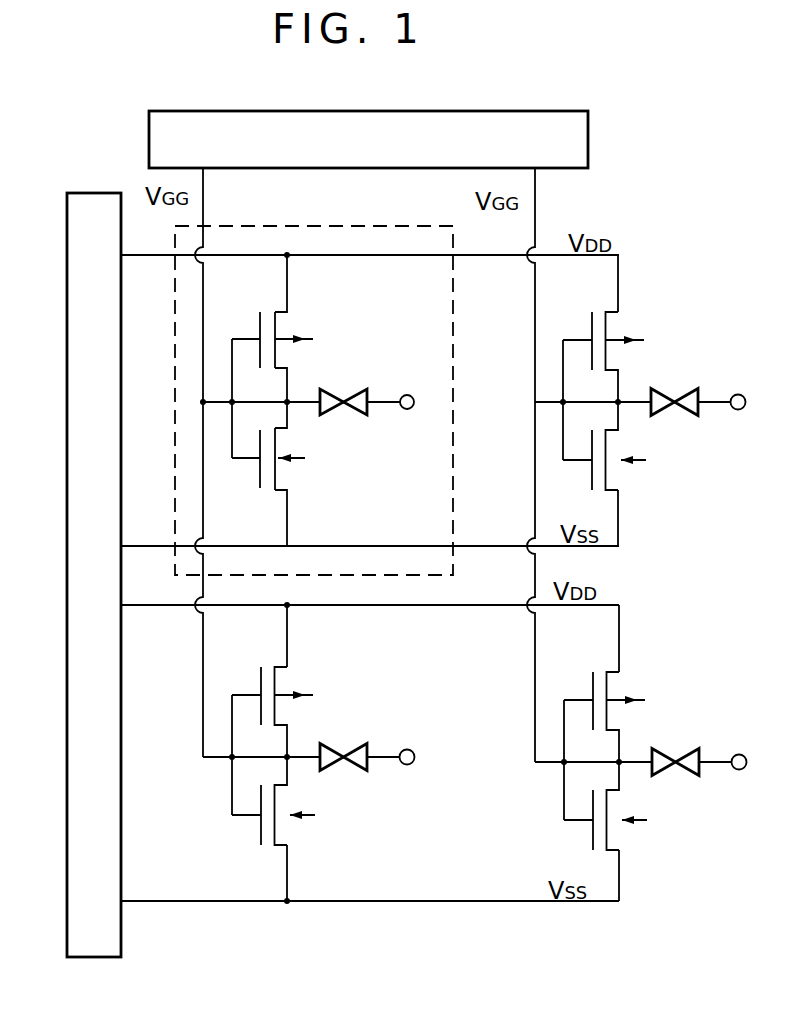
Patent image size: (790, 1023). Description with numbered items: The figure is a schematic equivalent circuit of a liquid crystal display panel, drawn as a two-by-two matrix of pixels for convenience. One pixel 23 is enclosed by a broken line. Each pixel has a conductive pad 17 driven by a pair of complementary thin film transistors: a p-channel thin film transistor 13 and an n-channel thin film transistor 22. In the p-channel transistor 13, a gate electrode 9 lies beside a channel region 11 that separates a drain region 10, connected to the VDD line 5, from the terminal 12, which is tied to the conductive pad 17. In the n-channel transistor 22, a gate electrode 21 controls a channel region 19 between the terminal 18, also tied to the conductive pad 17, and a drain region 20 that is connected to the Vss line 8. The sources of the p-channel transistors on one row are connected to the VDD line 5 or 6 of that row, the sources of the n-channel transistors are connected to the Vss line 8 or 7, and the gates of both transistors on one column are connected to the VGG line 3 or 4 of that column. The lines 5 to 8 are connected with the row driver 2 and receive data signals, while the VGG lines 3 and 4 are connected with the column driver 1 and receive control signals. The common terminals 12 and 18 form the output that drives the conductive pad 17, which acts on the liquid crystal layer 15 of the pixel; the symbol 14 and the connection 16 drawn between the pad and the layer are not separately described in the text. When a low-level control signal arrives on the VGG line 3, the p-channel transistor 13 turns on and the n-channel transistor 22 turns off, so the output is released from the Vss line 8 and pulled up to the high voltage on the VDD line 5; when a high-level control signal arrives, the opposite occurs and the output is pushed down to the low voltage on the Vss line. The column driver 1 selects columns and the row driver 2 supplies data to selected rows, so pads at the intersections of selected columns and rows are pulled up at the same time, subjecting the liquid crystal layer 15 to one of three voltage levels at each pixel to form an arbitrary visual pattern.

The column driver 1 is at (450, 117).
The row driver 2 is at (74, 540).
The VGG line 3 is at (205, 207).
The VGG line 4 is at (535, 225).
The VDD line 5 is at (148, 256).
The VDD line 6 is at (153, 606).
The Vss line 7 is at (225, 900).
The Vss line 8 is at (155, 545).
The gate electrode 9 is at (256, 328).
The drain region 10 is at (289, 312).
The channel region 11 is at (278, 334).
The drain terminal 12 is at (289, 368).
The p-channel thin film transistor 13 is at (312, 327).
The transmission gate 14 is at (304, 397).
The liquid crystal layer 15 is at (367, 395).
The output line 16 is at (370, 413).
The conductive pad 17 is at (310, 416).
The drain terminal 18 is at (289, 430).
The channel region 19 is at (278, 478).
The drain region 20 is at (289, 492).
The gate electrode 21 is at (257, 472).
The n-channel thin film transistor 22 is at (308, 474).
The pixel 23 is at (455, 345).